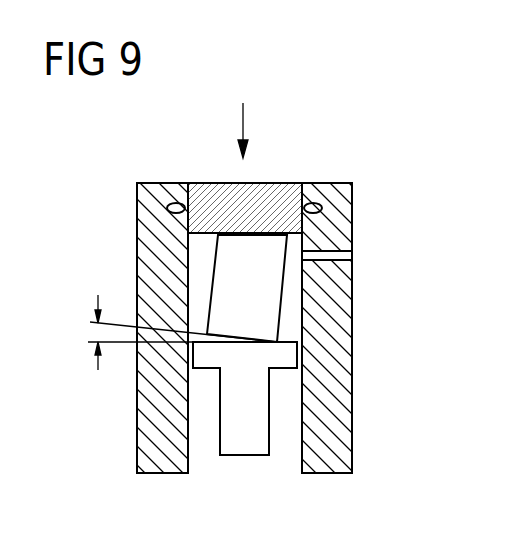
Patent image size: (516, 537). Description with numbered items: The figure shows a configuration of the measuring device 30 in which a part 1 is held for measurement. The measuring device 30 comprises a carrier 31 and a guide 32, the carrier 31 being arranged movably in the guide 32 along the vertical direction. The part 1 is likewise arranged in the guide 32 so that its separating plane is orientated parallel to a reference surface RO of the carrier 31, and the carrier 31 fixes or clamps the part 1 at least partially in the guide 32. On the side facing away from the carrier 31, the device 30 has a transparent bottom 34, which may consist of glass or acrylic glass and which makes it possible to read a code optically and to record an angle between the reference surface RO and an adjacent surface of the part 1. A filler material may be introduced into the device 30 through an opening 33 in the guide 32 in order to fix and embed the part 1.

The measuring device 30 is at (333, 115).
The carrier 31 is at (250, 443).
The guide 32 is at (333, 406).
The opening 33 is at (345, 258).
The transparent bottom 34 is at (207, 207).
The part 1 is at (252, 288).
The reference surface RO is at (285, 337).